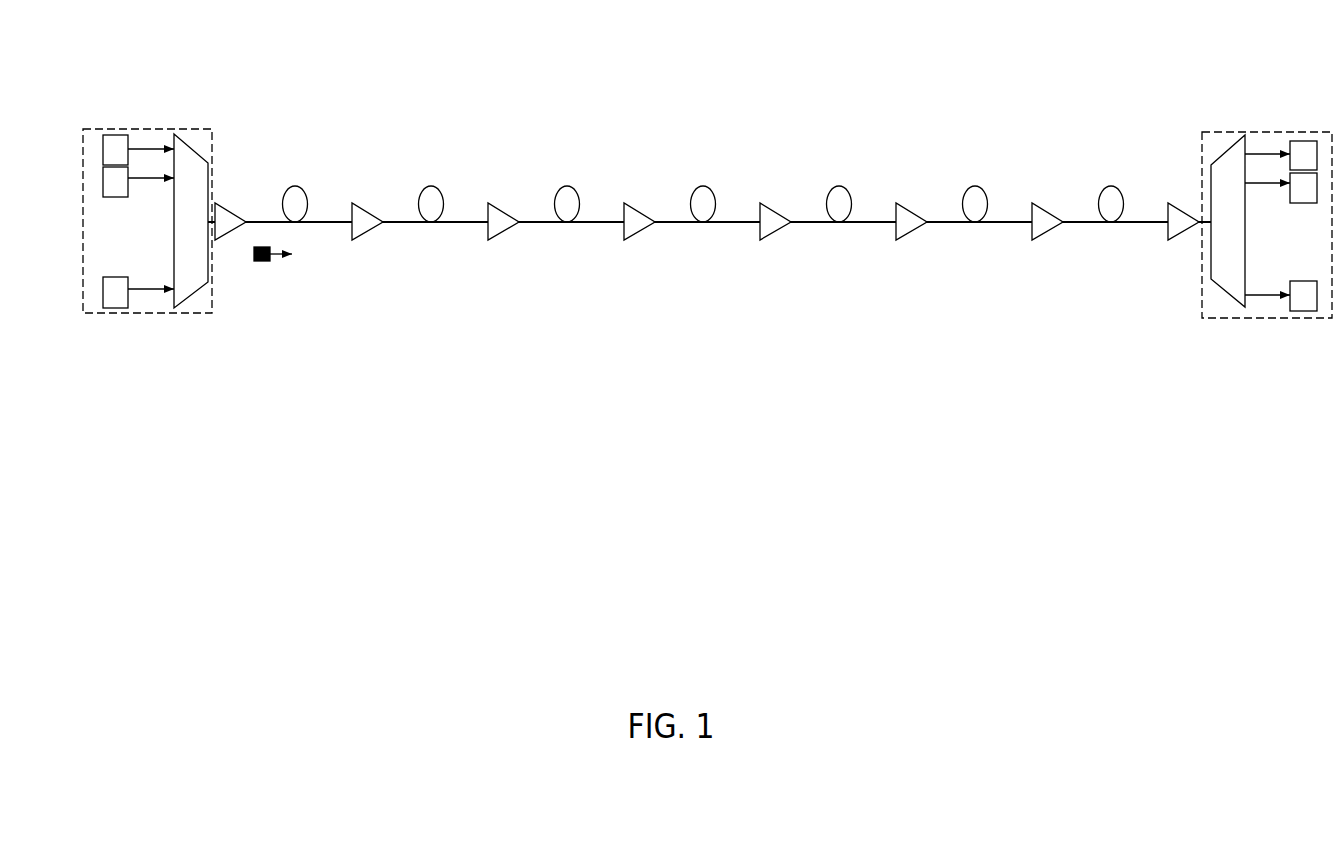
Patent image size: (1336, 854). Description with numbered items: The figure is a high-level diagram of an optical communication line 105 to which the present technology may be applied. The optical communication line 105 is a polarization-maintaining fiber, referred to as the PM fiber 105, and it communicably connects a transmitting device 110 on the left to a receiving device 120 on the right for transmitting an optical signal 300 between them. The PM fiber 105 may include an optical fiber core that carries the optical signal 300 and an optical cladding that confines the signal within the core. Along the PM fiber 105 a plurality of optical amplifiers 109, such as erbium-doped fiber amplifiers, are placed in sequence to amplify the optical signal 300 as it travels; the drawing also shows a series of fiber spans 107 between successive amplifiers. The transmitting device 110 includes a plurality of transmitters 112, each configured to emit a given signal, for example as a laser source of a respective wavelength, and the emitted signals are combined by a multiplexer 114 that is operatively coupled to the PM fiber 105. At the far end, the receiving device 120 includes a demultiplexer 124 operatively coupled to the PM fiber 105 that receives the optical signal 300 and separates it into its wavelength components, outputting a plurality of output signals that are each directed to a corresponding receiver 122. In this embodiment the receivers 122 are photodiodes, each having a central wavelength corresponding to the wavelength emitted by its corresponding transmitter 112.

The optical communication line 105 is at (318, 175).
The fiber span (coil) 107 is at (470, 220).
The optical amplifiers 109 is at (498, 237).
The transmitting device 110 is at (158, 225).
The transmitters 112 is at (115, 135).
The multiplexer 114 is at (193, 145).
The receiving device 120 is at (1251, 231).
The receivers 122 is at (1307, 143).
The demultiplexer 124 is at (1225, 160).
The optical signal 300 is at (268, 263).